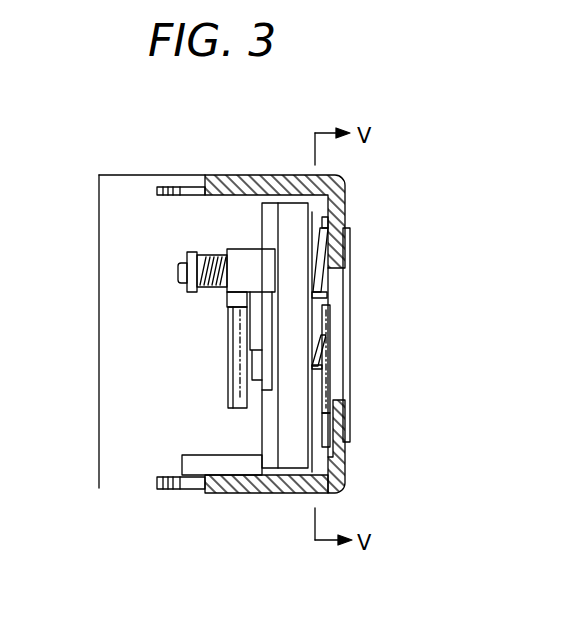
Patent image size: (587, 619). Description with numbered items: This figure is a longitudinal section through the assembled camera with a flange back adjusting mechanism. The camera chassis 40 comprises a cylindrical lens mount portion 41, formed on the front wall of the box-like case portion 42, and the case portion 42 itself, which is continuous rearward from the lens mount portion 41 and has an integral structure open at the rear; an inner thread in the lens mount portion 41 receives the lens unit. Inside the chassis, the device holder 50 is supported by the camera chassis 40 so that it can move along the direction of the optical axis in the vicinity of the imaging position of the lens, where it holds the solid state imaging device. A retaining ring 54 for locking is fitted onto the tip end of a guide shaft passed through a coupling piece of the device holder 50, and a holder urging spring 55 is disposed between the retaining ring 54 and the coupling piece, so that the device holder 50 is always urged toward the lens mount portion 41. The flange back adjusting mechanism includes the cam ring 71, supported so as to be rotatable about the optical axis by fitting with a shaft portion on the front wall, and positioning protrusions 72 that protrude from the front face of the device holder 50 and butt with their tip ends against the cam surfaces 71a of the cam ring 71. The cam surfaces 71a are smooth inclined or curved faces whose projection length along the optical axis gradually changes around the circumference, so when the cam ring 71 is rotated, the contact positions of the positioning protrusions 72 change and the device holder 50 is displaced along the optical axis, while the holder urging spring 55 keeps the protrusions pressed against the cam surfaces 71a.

The camera chassis 40 is at (359, 199).
The lens mount portion 41 is at (350, 391).
The case portion 42 is at (237, 482).
The device holder 50 is at (295, 453).
The retaining ring 54 is at (178, 272).
The holder urging spring 55 is at (227, 289).
The cam ring 71 is at (315, 275).
The cam surface 71a is at (323, 283).
The positioning protrusion 72 is at (315, 268).